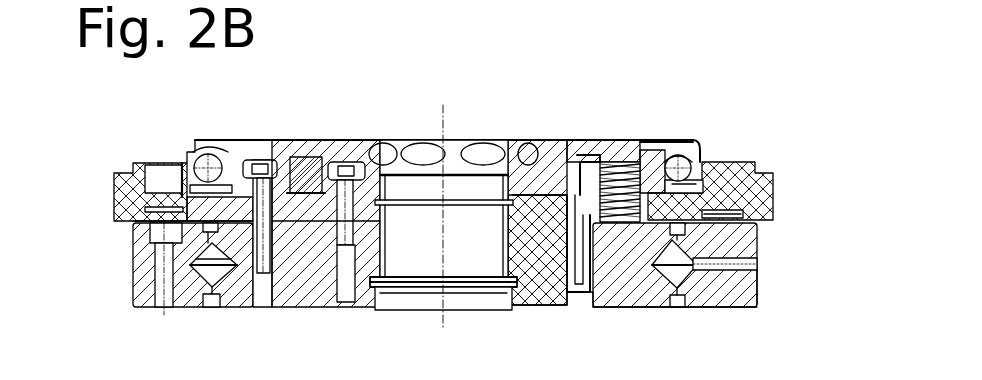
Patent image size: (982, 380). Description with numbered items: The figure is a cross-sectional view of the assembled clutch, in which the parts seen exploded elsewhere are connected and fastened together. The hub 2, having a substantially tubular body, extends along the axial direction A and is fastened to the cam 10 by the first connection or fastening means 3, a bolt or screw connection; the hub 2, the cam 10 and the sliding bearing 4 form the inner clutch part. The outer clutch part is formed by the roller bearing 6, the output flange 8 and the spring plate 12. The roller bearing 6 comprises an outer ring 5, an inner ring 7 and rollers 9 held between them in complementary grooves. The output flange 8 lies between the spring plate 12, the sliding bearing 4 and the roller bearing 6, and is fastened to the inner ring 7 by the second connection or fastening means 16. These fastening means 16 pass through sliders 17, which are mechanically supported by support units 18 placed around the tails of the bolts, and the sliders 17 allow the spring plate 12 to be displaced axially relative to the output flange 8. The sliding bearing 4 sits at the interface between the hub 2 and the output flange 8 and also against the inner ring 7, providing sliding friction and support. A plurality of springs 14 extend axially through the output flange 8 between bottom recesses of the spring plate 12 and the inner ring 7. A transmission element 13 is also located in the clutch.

The hub 2 is at (535, 290).
The first connection or fastening means 3 is at (360, 173).
The sliding bearing 4 is at (313, 287).
The outer ring 5 is at (740, 295).
The roller bearing 6 is at (757, 268).
The inner ring 7 is at (628, 297).
The output flange 8 is at (742, 177).
The rollers 9 is at (690, 283).
The cam 10 is at (530, 168).
The spring plate 12 is at (590, 172).
The transmission element 13 is at (687, 160).
The springs 14 is at (627, 172).
The second connection or fastening means 16 is at (272, 170).
The sliders 17 is at (283, 163).
The support units 18 is at (243, 188).
The axial direction A is at (443, 125).